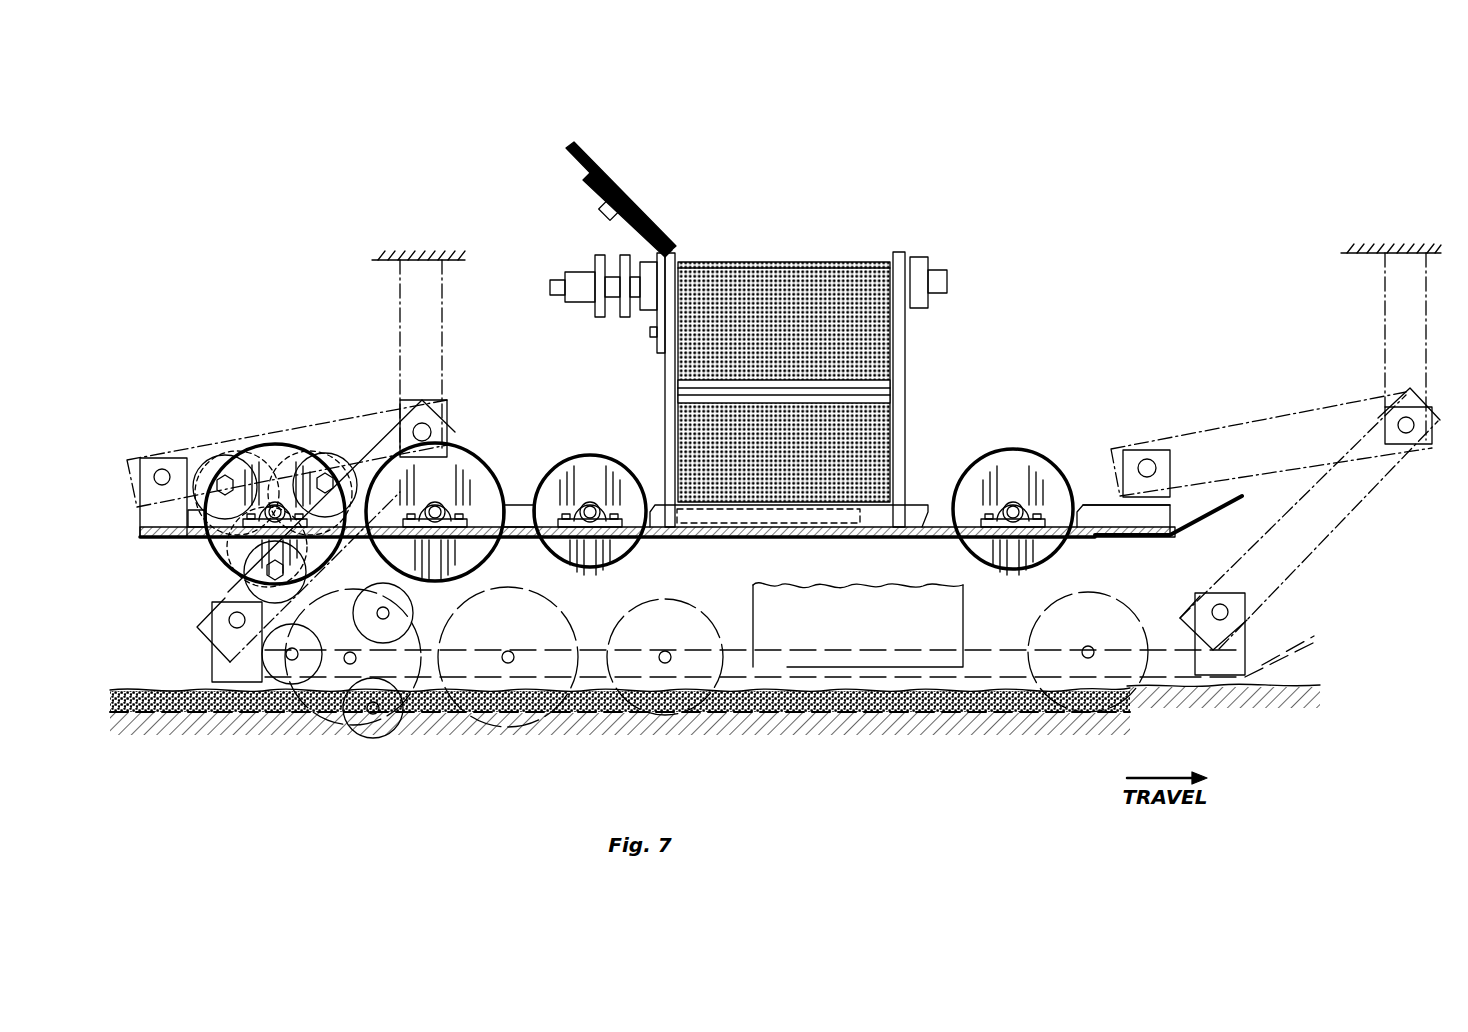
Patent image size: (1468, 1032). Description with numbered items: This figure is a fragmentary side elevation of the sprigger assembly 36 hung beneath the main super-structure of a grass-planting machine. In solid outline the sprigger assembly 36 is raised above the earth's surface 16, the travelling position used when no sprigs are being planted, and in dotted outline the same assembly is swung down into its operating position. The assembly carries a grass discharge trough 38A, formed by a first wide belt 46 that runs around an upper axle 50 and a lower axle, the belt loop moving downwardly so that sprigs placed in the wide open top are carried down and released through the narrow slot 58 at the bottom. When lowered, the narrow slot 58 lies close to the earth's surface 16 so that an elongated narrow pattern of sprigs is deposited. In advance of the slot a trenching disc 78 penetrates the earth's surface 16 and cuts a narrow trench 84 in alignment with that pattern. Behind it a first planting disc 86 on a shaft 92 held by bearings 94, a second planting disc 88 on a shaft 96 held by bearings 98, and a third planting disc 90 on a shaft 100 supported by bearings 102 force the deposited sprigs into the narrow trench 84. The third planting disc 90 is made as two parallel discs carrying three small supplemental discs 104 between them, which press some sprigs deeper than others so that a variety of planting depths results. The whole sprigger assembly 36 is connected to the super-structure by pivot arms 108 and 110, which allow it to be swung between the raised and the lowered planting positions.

The earth's surface 16 is at (760, 700).
The sprigger assembly 36 is at (989, 400).
The grass discharge trough 38A is at (866, 218).
The first wide belt 46 is at (785, 310).
The first or upper axle 50 is at (937, 280).
The narrow slot 58 is at (818, 522).
The trenching disc 78 is at (1030, 460).
The narrow trench 84 is at (980, 702).
The first planting disc 86 is at (628, 485).
The second planting disc 88 is at (490, 478).
The third planting disc 90 is at (292, 448).
The shaft 92 is at (593, 503).
The bearings 94 is at (605, 515).
The shaft 96 is at (440, 502).
The bearings 98 is at (455, 516).
The shaft 100 is at (267, 503).
The bearings 102 is at (252, 513).
The supplemental disc 104 is at (332, 453).
The pivot arm 108 is at (1249, 421).
The pivot arm 110 is at (183, 440).